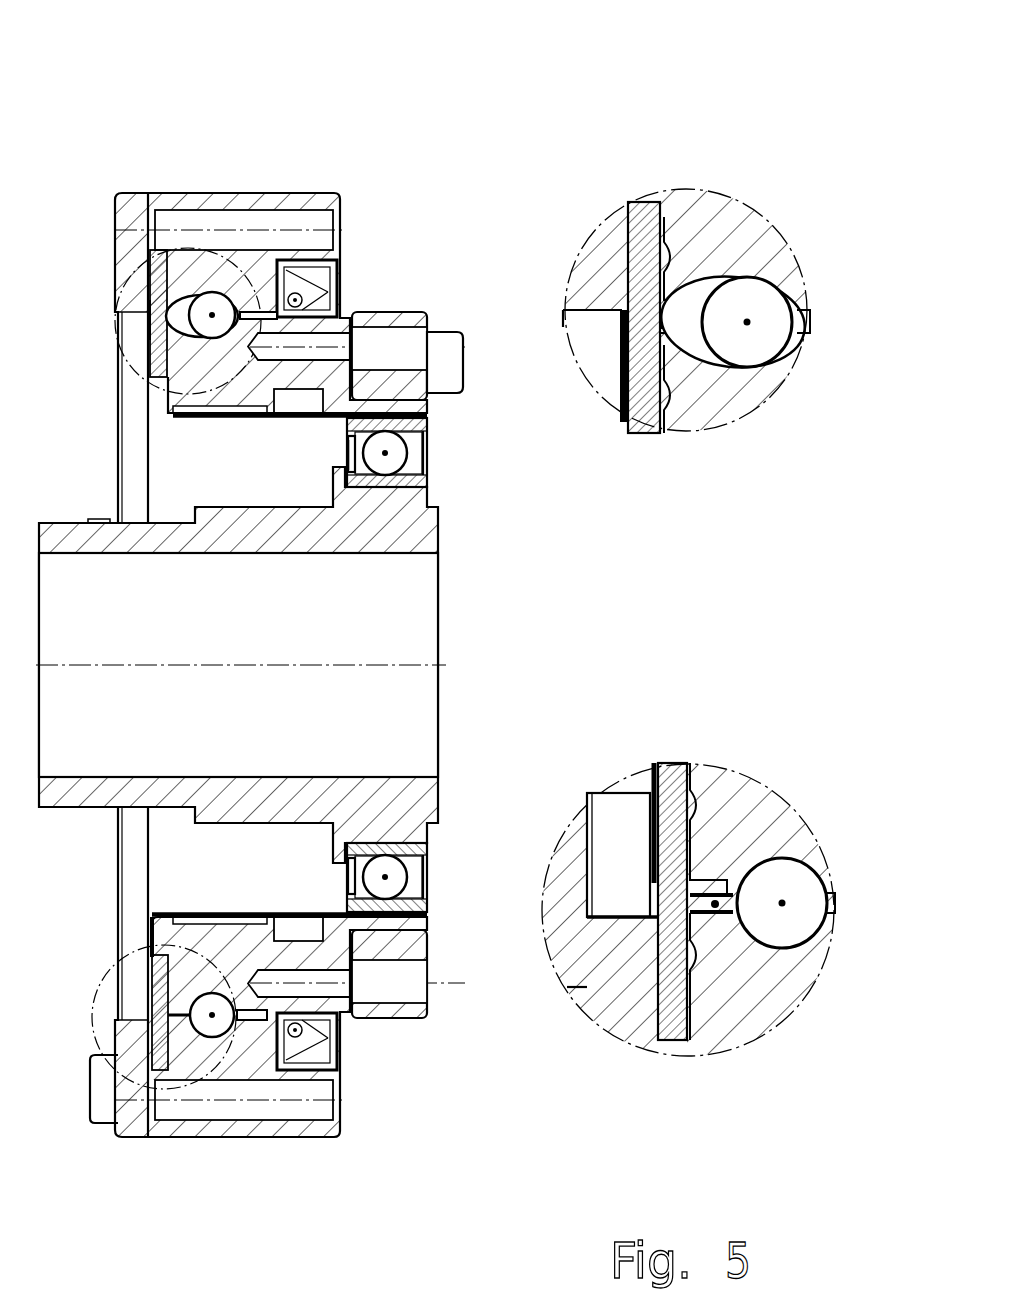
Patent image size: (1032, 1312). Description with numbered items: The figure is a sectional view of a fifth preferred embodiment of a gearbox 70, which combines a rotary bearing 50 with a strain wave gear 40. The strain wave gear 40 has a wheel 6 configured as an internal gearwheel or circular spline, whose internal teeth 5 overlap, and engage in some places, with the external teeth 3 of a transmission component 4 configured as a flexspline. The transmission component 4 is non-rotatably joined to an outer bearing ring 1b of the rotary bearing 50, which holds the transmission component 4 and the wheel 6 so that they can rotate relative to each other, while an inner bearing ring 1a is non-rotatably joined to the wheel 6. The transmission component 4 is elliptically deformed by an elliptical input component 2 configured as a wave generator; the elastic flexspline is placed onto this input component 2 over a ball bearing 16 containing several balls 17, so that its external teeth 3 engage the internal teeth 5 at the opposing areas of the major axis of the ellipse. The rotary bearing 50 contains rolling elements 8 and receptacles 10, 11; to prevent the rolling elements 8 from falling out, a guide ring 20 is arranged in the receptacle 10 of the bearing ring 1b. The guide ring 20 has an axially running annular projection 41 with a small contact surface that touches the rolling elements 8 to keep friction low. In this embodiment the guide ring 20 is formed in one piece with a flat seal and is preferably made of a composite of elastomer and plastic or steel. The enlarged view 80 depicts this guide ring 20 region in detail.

The input component 2 is at (393, 523).
The transmission component 4 is at (128, 260).
The inner bearing ring 1a is at (212, 380).
The outer bearing ring 1b is at (247, 273).
The external teeth 3 is at (420, 413).
The internal teeth 5 is at (424, 404).
The wheel 6 is at (410, 318).
The rolling elements 8 is at (212, 315).
The receptacle 10 is at (158, 293).
The receptacle 11 is at (158, 318).
The ball bearing 16 is at (347, 452).
The balls 17 is at (385, 453).
The guide ring 20 is at (642, 242).
The strain wave gear 40 is at (593, 665).
The annular projection 41 is at (690, 331).
The rotary bearing 50 is at (395, 192).
The gearbox 70 is at (210, 72).
The enlarged view 80 is at (840, 176).